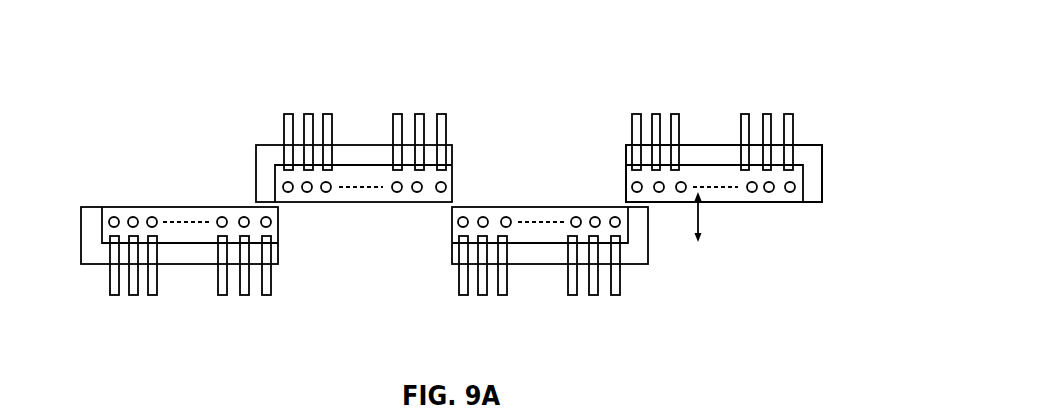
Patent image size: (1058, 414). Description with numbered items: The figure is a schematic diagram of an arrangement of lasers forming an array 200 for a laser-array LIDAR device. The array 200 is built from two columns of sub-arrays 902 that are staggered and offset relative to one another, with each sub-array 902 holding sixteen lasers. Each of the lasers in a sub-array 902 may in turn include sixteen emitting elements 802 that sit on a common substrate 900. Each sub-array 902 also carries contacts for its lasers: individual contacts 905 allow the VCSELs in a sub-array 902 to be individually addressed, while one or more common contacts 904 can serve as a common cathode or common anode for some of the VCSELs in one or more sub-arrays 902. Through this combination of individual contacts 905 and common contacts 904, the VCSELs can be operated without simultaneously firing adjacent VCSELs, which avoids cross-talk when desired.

The array 200 is at (799, 32).
The emitting elements 802 is at (791, 191).
The common substrate 900 is at (823, 174).
The sub-array 902 is at (370, 132).
The common contacts 904 is at (284, 127).
The individual contacts 905 is at (327, 114).